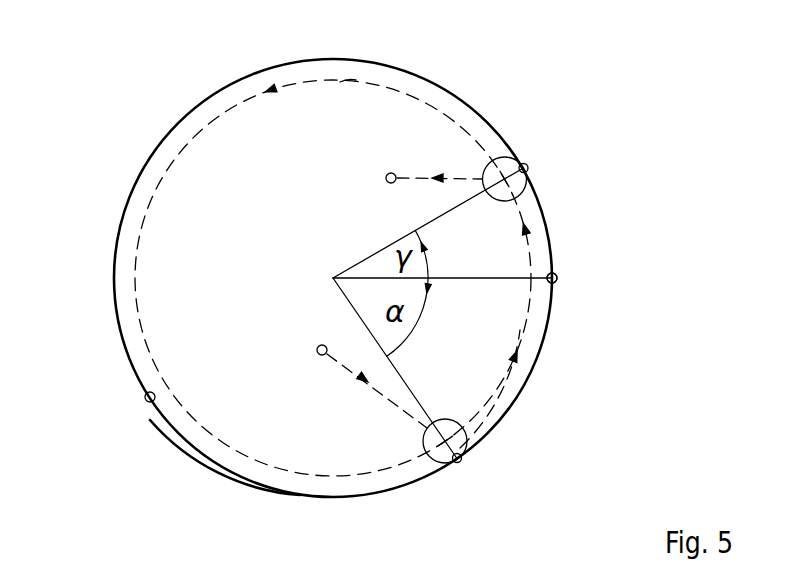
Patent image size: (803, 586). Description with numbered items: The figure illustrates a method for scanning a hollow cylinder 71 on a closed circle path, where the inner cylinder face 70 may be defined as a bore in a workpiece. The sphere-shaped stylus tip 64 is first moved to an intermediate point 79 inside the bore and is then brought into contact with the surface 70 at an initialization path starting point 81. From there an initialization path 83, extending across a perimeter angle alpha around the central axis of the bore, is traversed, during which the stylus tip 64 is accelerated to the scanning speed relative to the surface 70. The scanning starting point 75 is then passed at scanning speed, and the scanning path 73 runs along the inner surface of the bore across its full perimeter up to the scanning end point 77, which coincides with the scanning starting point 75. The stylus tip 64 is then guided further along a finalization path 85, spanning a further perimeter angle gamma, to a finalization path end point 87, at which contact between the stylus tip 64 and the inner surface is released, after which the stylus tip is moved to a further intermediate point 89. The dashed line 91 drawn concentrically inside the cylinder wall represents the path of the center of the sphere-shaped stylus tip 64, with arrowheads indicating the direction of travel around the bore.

The stylus tip 64 is at (505, 158).
The inner cylinder face 70 is at (147, 400).
The hollow cylinder 71 is at (113, 277).
The scanning path 73 is at (228, 474).
The scanning starting point 75 is at (556, 284).
The scanning end point 77 is at (558, 276).
The intermediate point 79 is at (316, 350).
The initialization path starting point 81 is at (462, 461).
The initialization path 83 is at (518, 393).
The finalization path 85 is at (548, 223).
The finalization path end point 87 is at (529, 167).
The further intermediate point 89 is at (386, 178).
The dashed line 91 is at (343, 84).